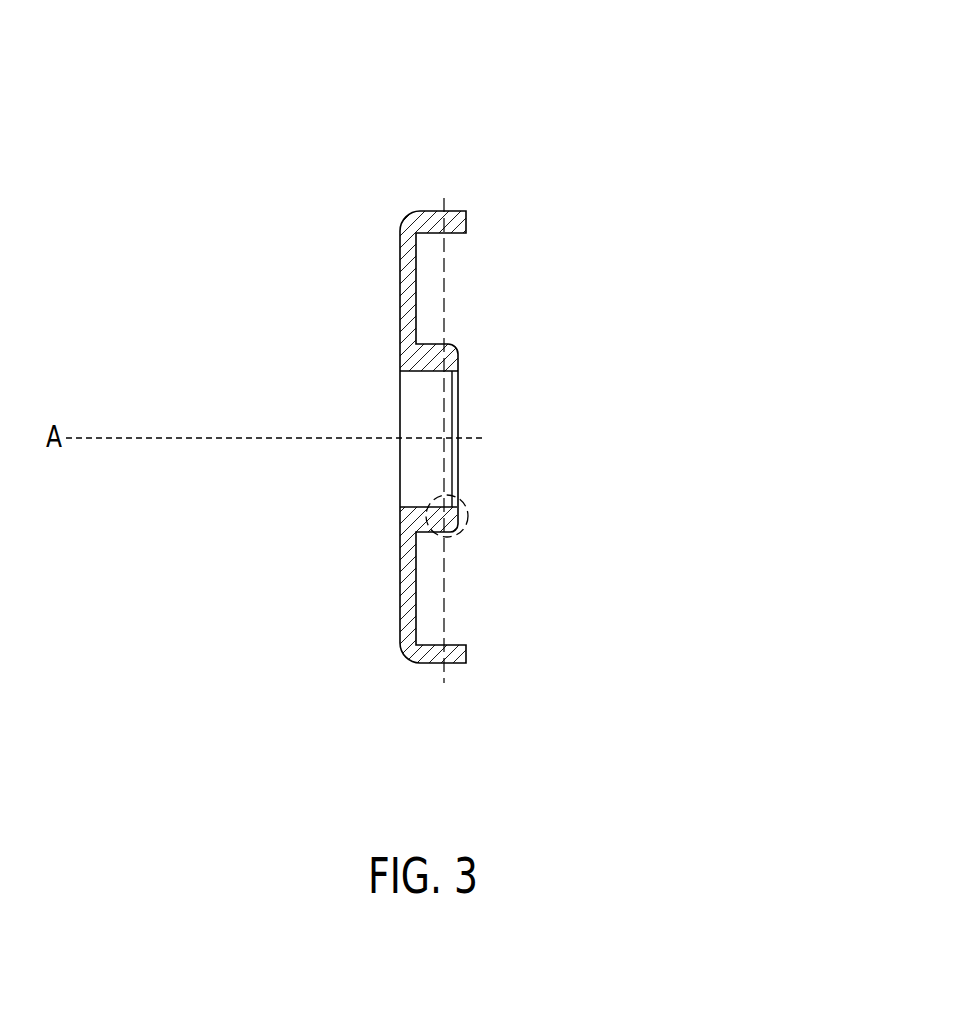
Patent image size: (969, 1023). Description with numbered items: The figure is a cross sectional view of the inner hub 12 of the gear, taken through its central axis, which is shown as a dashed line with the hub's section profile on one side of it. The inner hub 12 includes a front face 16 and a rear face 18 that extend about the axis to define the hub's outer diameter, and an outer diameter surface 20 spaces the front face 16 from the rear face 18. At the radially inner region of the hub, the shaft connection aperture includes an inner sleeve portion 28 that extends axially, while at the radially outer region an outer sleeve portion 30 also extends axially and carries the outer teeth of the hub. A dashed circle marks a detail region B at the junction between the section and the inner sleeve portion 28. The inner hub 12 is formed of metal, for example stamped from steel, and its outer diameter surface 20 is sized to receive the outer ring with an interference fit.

The inner hub 12 is at (552, 98).
The front face 16 is at (401, 288).
The rear face 18 is at (410, 572).
The outer diameter surface 20 is at (415, 663).
The inner sleeve portion 28 is at (435, 344).
The outer sleeve portion 30 is at (466, 213).
The detail region B is at (462, 505).